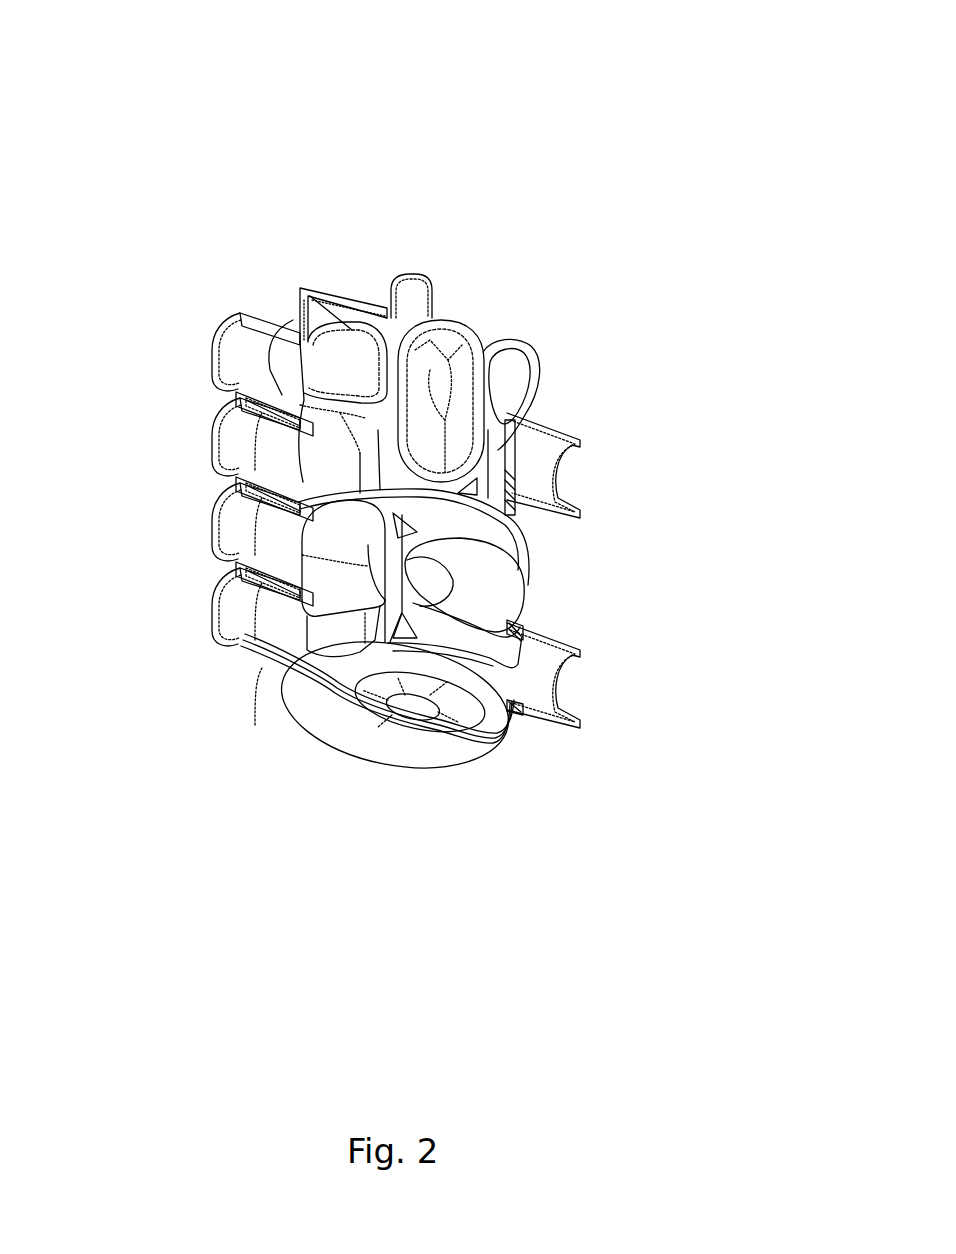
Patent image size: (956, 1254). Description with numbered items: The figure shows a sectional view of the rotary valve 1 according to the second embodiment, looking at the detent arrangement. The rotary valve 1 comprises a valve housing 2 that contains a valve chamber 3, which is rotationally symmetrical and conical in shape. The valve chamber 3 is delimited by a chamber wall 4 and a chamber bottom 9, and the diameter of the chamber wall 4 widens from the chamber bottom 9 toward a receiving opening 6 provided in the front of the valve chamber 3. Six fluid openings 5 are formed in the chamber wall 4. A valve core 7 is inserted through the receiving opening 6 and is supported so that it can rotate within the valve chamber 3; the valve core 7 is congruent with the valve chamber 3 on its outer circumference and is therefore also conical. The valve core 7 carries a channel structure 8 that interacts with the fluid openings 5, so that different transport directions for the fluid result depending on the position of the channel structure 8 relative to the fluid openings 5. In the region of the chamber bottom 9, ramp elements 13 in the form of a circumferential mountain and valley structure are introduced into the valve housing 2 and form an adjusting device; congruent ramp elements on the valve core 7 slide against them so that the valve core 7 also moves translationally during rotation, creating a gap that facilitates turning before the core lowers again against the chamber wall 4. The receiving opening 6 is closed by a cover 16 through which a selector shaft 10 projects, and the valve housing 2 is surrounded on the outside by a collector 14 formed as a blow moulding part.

The rotary valve 1 is at (536, 103).
The valve housing 2 is at (518, 490).
The valve chamber 3 is at (318, 355).
The chamber wall 4 is at (315, 512).
The fluid openings 5 is at (552, 670).
The receiving opening 6 is at (478, 294).
The valve core 7 is at (447, 530).
The channel structure 8 is at (478, 582).
The chamber bottom 9 is at (448, 735).
The selector shaft 10 is at (403, 290).
The ramp elements 13 is at (430, 683).
The collector 14 is at (232, 359).
The cover 16 is at (320, 284).